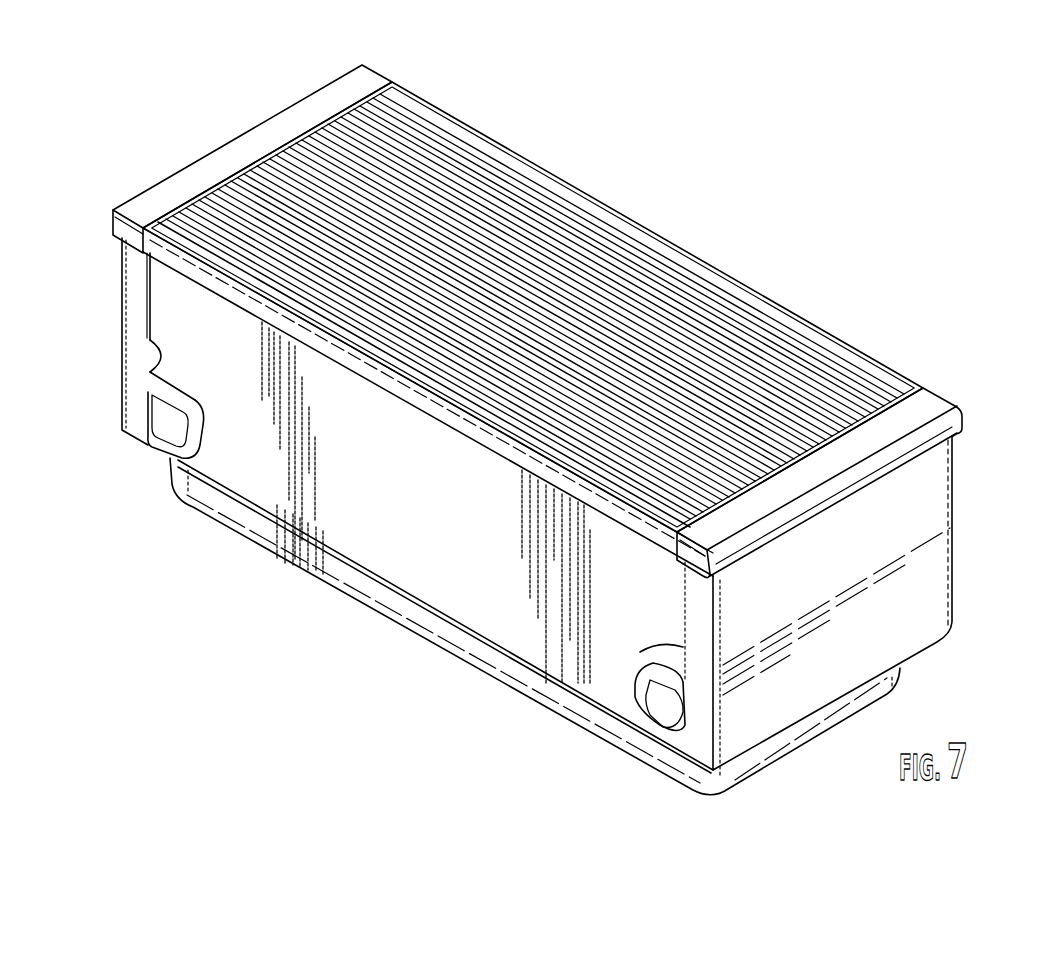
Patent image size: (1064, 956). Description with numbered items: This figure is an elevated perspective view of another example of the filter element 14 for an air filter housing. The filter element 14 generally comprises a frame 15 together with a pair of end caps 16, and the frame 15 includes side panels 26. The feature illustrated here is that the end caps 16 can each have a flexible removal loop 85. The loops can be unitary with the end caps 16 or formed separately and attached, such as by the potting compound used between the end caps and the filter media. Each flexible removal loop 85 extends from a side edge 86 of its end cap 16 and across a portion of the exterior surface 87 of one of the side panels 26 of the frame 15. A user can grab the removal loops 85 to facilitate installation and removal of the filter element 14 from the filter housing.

The filter element 14 is at (898, 248).
The end cap 16 is at (118, 323).
The frame 15 is at (390, 538).
The side panel 26 is at (444, 620).
The exterior surface 87 is at (535, 626).
The side edge 86 is at (150, 372).
The flexible removal loop 85 is at (167, 448).